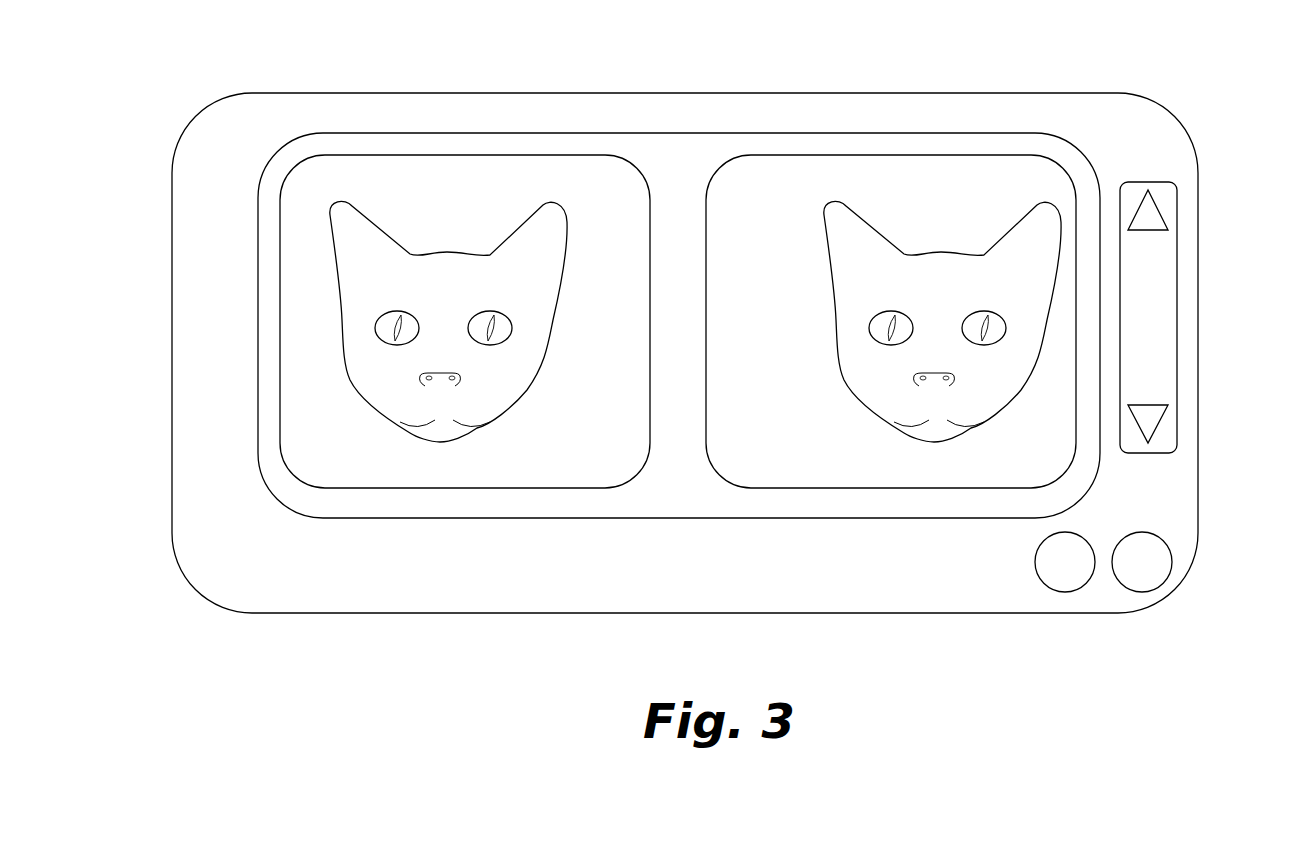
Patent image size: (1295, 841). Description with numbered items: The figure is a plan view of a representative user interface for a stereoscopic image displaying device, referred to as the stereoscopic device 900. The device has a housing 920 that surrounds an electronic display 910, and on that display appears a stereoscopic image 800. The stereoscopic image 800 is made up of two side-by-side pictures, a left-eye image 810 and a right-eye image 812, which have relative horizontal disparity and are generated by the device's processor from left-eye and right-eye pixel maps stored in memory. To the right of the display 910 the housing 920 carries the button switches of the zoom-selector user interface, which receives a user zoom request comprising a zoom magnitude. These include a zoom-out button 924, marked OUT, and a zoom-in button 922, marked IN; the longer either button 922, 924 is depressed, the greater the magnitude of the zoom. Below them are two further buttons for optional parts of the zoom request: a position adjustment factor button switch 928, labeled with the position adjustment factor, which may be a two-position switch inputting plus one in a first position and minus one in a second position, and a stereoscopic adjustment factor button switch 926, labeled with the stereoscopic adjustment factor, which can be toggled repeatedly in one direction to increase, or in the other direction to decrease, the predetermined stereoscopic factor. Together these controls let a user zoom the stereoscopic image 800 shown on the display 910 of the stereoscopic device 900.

The stereoscopic device 900 is at (669, 354).
The housing 920 is at (419, 598).
The stereoscopic image 800 is at (613, 306).
The electronic display 910 is at (654, 502).
The left-eye image 810 is at (334, 202).
The right-eye image 812 is at (1054, 204).
The zoom-out button 924 is at (1155, 217).
The zoom-in button 922 is at (1155, 420).
The position adjustment factor button switch 928 is at (1060, 583).
The stereoscopic adjustment factor button switch 926 is at (1147, 583).